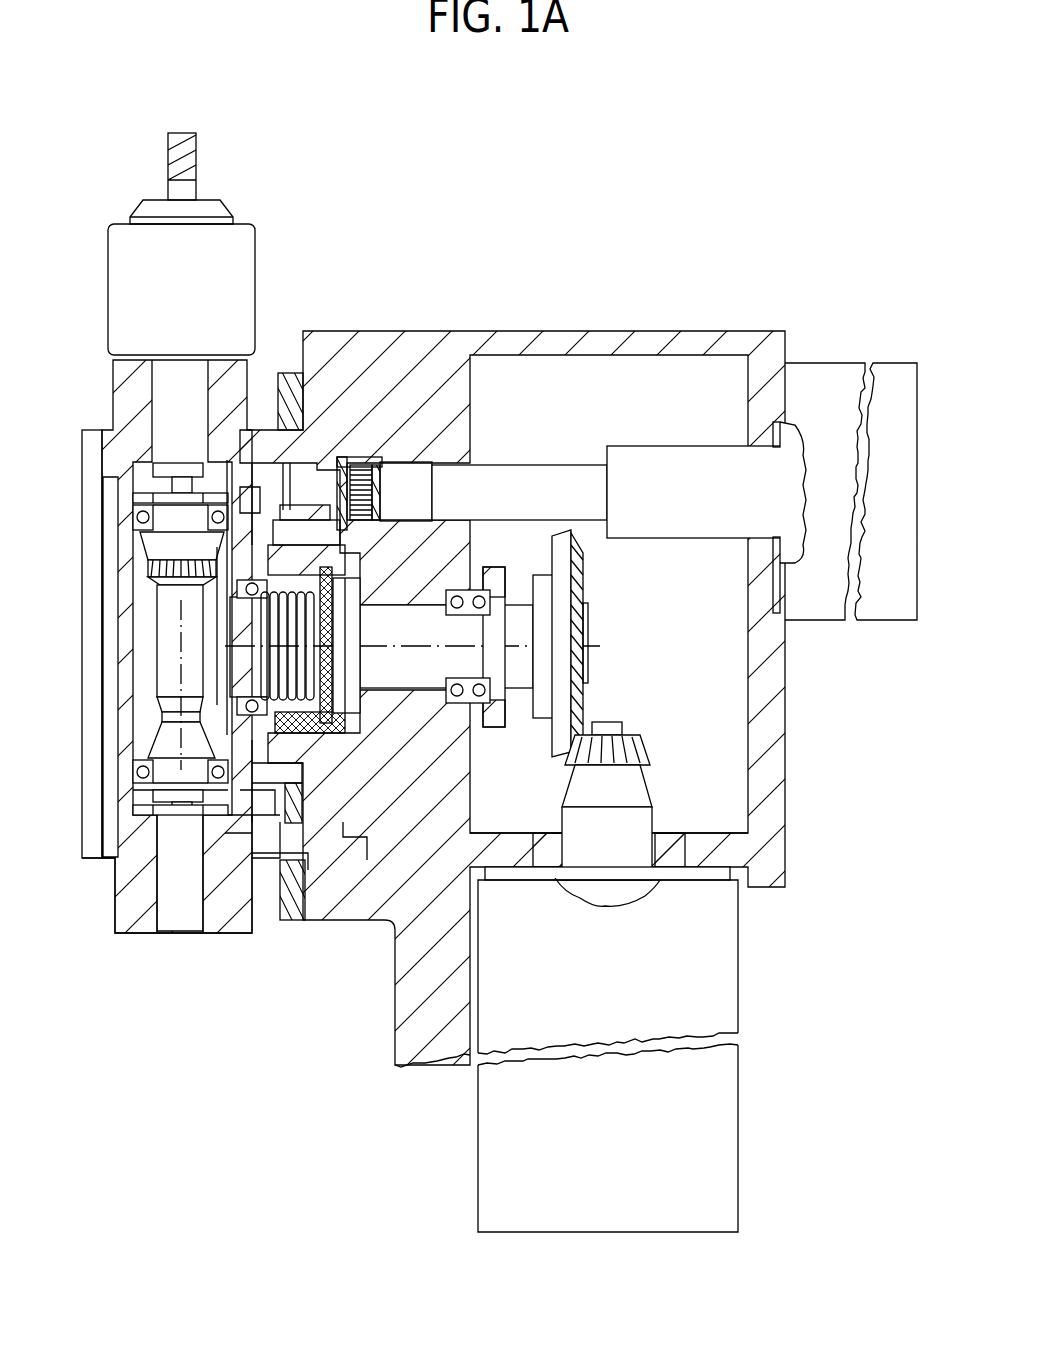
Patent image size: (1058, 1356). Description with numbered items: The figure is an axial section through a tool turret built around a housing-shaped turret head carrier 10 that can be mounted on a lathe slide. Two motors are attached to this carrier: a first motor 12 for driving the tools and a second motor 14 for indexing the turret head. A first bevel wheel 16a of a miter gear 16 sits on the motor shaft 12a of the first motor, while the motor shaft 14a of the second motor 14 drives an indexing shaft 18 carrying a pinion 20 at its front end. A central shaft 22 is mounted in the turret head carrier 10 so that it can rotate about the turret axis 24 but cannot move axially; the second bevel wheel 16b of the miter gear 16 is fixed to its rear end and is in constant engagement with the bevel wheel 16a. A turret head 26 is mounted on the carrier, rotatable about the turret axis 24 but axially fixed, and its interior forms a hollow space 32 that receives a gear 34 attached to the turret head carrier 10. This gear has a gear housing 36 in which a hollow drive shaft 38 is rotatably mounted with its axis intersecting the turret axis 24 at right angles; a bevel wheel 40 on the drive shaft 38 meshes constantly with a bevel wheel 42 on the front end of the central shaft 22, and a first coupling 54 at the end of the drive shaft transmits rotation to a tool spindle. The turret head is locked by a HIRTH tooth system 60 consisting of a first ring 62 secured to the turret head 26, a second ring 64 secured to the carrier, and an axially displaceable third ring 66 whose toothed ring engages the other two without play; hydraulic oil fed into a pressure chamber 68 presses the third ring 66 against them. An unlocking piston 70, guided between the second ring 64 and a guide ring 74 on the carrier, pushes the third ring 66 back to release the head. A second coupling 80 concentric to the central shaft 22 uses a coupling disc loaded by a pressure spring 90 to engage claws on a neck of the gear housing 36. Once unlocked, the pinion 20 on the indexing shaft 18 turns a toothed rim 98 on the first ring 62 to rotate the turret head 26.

The turret head carrier 10 is at (790, 320).
The first motor 12 is at (725, 1112).
The motor shaft 12a is at (612, 905).
The second motor 14 is at (853, 375).
The motor shaft 14a is at (798, 504).
The miter gear 16 is at (624, 705).
The first bevel wheel 16a is at (640, 742).
The second bevel wheel 16b is at (583, 565).
The indexing shaft 18 is at (495, 490).
The pinion 20 is at (385, 505).
The central shaft 22 is at (488, 628).
The turret axis 24 is at (565, 645).
The turret head 26 is at (104, 948).
The hollow space 32 is at (130, 470).
The gear 34 is at (165, 822).
The gear housing 36 is at (118, 524).
The drive shaft 38 is at (180, 630).
The bevel wheel 40 is at (152, 566).
The bevel wheel 42 is at (218, 678).
The first coupling 54 is at (172, 440).
The HIRTH tooth system 60 is at (306, 830).
The first ring 62 is at (343, 850).
The second ring 64 is at (310, 470).
The third ring 66 is at (248, 822).
The pressure chamber 68 is at (262, 800).
The unlocking piston 70 is at (342, 498).
The guide ring 74 is at (335, 750).
The second coupling 80 is at (362, 714).
The pressure spring 90 is at (305, 600).
The toothed rim 98 is at (365, 468).